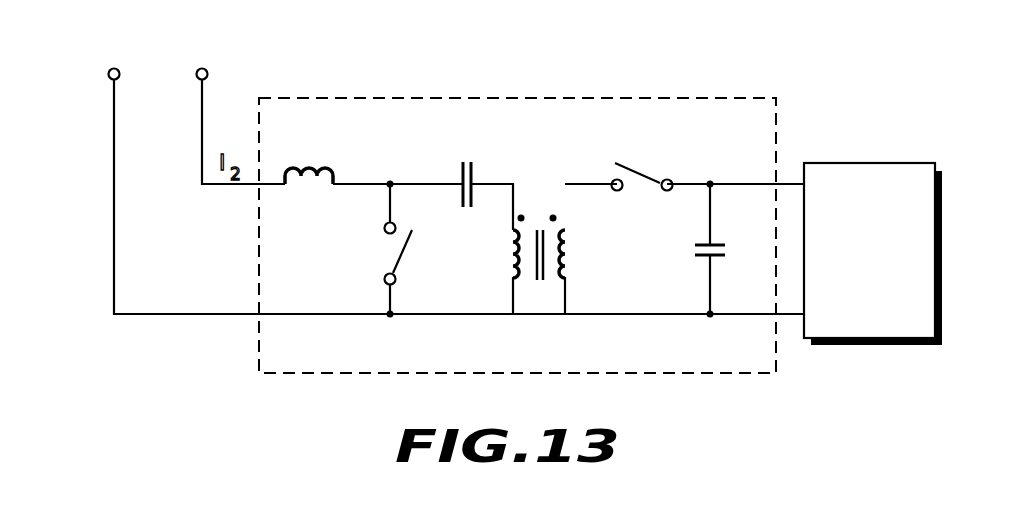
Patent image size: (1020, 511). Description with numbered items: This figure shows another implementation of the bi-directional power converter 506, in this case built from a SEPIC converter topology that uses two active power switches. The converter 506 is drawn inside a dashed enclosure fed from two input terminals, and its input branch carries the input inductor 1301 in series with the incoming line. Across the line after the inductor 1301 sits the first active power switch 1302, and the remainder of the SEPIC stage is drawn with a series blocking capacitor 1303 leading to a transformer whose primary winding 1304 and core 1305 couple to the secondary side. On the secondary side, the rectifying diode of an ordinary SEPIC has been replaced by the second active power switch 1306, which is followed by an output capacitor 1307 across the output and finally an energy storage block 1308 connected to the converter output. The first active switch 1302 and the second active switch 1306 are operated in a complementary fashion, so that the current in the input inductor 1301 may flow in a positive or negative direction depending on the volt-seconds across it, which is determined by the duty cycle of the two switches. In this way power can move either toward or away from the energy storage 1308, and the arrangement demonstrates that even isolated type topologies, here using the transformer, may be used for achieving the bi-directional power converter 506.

The bi-directional power converter 506 is at (465, 98).
The inductor L_in 1301 is at (305, 166).
The active power switch S1 1302 is at (398, 262).
The blocking capacitor C_B 1303 is at (467, 162).
The transformer primary winding L1 1304 is at (522, 280).
The transformer T1 1305 is at (538, 228).
The active power switch S2 1306 is at (566, 280).
The output capacitor C_O 1307 is at (694, 252).
The energy storage 1308 is at (830, 163).